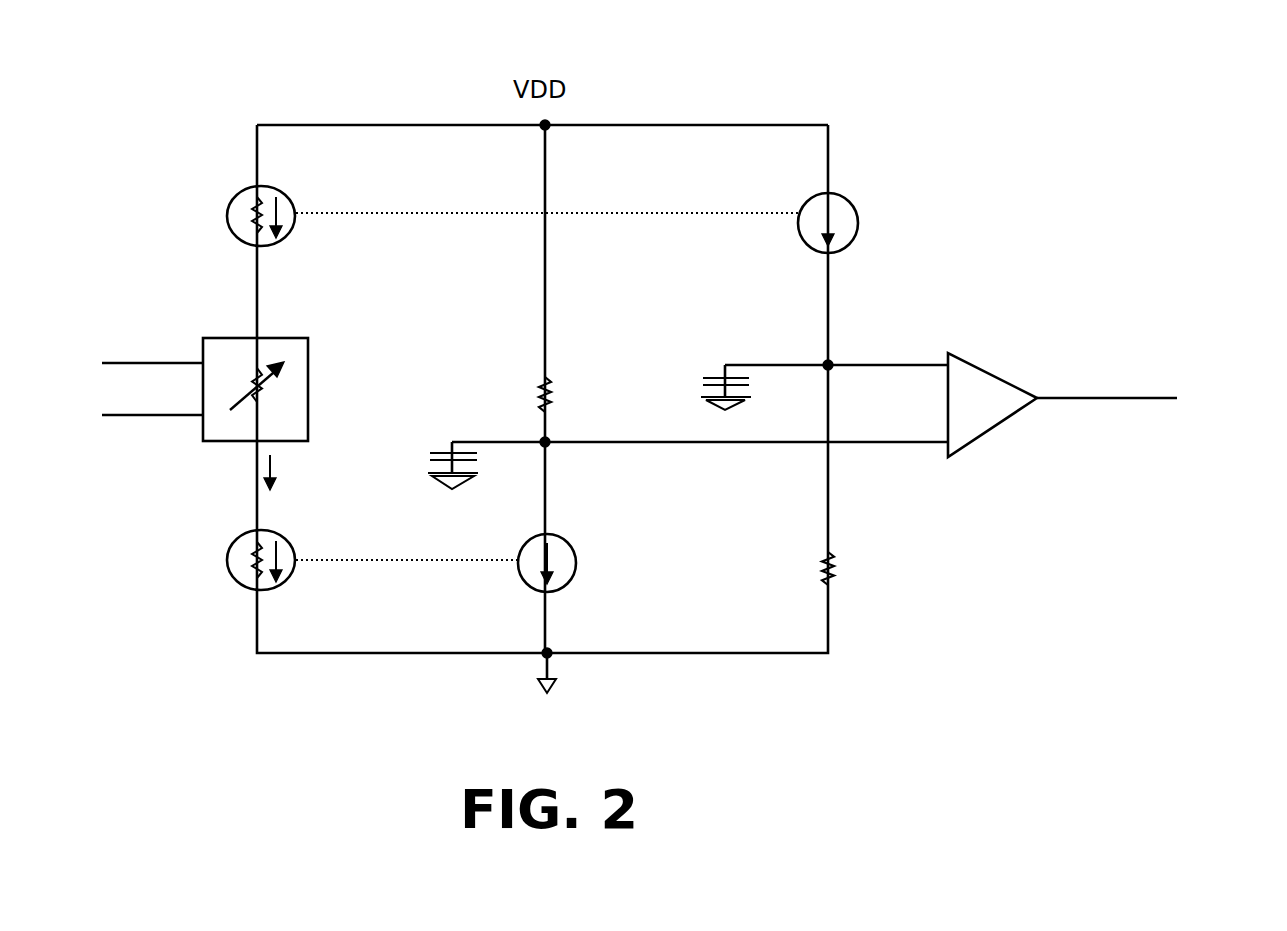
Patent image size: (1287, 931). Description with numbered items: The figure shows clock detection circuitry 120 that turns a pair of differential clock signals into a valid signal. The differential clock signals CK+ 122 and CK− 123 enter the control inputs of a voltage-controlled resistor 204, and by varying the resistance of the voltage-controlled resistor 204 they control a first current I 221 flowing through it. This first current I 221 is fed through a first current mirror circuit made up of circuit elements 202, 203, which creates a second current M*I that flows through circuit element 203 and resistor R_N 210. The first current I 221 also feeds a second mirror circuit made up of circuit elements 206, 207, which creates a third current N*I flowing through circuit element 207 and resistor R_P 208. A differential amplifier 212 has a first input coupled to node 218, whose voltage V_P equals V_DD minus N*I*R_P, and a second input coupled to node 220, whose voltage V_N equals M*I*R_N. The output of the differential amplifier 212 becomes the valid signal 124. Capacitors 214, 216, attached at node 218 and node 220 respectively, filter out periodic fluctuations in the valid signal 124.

The clock detection circuitry 120 is at (762, 83).
The CK+ differential clock signal 122 is at (119, 352).
The CK− differential clock signal 123 is at (119, 416).
The valid signal 124 is at (1148, 403).
The circuit element of first current mirror 202 is at (286, 218).
The circuit element of first current mirror 203 is at (858, 221).
The voltage-controlled resistor 204 is at (286, 389).
The circuit element of second current mirror 206 is at (290, 560).
The circuit element of second current mirror 207 is at (574, 567).
The resistor R_P 208 is at (572, 393).
The resistor R_N 210 is at (863, 575).
The differential amplifier 212 is at (992, 405).
The capacitor 214 is at (428, 465).
The capacitor 216 is at (749, 387).
The node 218 is at (547, 447).
The node 220 is at (830, 360).
The first current I 221 is at (300, 474).